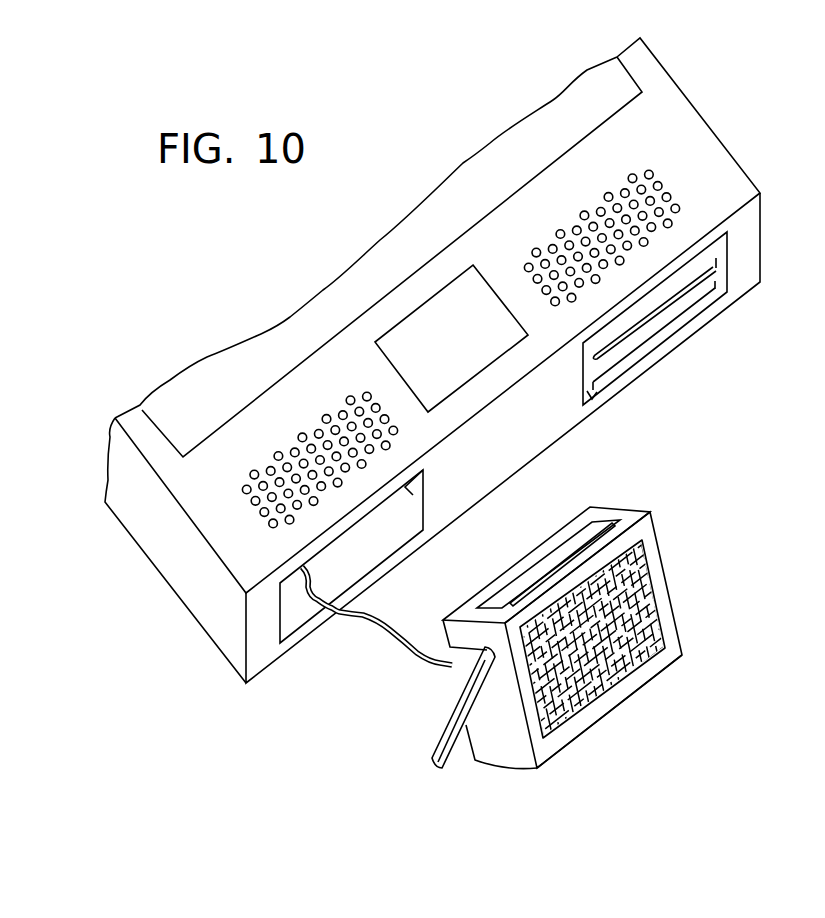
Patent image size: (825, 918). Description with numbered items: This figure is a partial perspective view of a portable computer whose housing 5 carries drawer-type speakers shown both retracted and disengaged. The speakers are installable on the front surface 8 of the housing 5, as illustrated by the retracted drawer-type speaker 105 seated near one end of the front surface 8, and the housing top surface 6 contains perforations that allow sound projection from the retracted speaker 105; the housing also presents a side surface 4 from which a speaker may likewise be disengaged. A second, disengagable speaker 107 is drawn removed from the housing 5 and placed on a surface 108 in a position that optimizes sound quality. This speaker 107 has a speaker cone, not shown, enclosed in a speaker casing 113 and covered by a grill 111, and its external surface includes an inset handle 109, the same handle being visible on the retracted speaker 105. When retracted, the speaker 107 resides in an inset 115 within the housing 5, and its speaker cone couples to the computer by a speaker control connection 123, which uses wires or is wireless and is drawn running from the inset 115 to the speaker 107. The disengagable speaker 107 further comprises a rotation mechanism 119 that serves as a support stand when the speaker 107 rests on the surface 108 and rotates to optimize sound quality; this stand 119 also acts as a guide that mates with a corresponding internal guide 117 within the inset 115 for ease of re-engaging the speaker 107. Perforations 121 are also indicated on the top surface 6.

The side surface 4 is at (173, 562).
The computer housing 5 is at (722, 123).
The housing top surface 6 is at (435, 428).
The front surface 8 is at (748, 252).
The retracted drawer-type speaker 105 is at (664, 351).
The disengagable drawer-type speaker 107 is at (706, 655).
The surface 108 is at (677, 733).
The inset handle 109 is at (673, 308).
The grill 111 is at (645, 607).
The speaker casing 113 is at (592, 399).
The inset 115 is at (287, 610).
The internal guide 117 is at (413, 495).
The rotation mechanism 119 is at (444, 738).
The ventilation holes 121 is at (305, 432).
The speaker control connection 123 is at (387, 630).